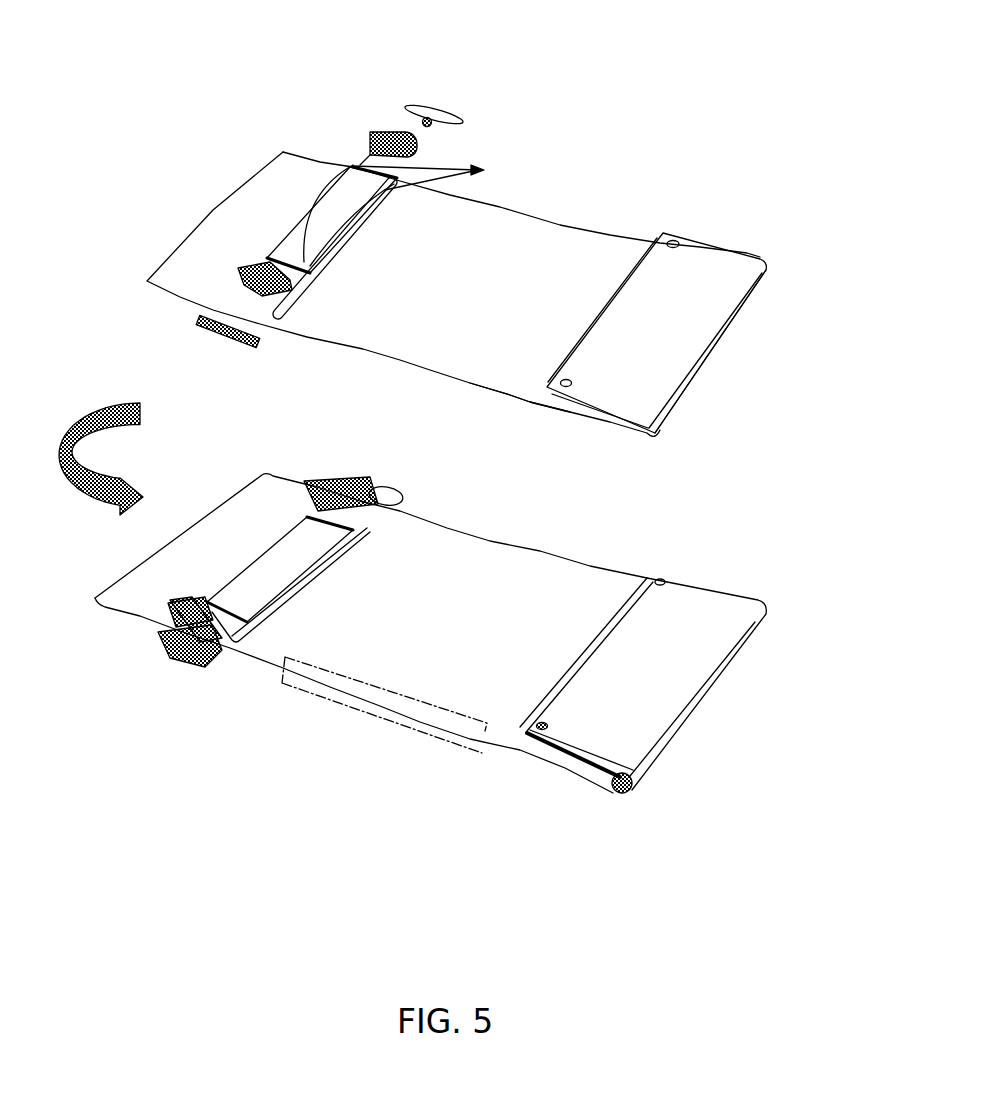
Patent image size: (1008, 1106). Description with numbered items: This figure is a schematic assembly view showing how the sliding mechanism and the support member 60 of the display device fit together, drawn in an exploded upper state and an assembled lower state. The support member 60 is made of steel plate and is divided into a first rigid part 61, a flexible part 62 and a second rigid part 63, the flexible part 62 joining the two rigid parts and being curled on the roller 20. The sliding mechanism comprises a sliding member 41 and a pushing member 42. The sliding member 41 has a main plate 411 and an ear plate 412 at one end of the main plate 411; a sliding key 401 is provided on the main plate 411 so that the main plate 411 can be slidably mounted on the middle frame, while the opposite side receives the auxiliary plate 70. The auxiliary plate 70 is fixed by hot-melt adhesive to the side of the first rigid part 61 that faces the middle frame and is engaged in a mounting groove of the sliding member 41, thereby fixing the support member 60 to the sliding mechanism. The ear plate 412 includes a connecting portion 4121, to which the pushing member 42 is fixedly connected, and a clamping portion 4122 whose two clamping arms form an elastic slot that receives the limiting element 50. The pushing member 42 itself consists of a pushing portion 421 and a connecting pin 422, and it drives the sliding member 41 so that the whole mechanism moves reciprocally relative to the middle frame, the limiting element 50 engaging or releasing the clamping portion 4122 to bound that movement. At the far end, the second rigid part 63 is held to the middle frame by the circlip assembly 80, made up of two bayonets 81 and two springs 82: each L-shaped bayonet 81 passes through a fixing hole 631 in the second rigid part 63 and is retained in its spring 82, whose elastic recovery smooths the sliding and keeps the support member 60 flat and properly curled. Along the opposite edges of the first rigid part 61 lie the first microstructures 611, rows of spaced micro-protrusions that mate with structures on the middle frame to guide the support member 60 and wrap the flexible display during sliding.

The roller 20 is at (618, 796).
The sliding member 41 is at (110, 217).
The pushing member 42 is at (207, 343).
The limiting element 50 is at (320, 487).
The support member 60 is at (443, 357).
The first rigid part 61 is at (597, 261).
The flexible part 62 is at (730, 310).
The second rigid part 63 is at (667, 289).
The auxiliary plate 70 is at (290, 300).
The circlip assembly 80 is at (571, 699).
The bayonet 81 is at (657, 575).
The spring 82 is at (568, 760).
The sliding key 401 is at (447, 173).
The main plate 411 is at (343, 190).
The ear plate 412 is at (263, 257).
The pushing portion 421 is at (437, 100).
The connecting pin 422 is at (455, 112).
The first microstructure 611 is at (312, 697).
The fixing hole 631 is at (572, 384).
The connecting portion 4121 is at (203, 663).
The clamping portion 4122 is at (173, 643).